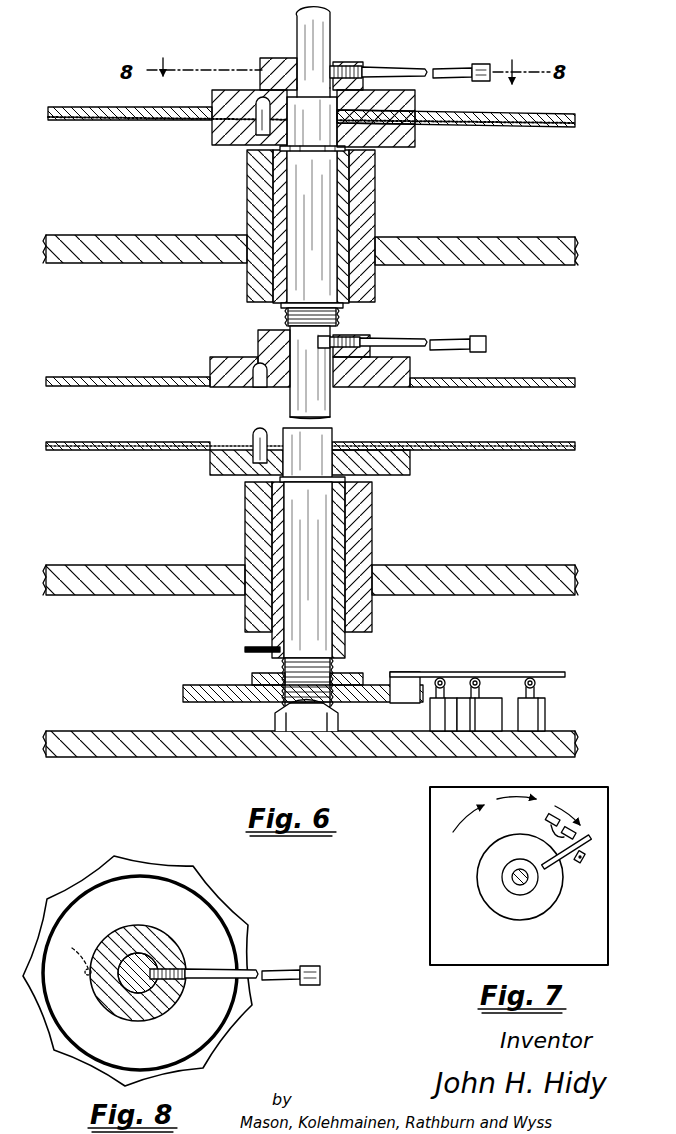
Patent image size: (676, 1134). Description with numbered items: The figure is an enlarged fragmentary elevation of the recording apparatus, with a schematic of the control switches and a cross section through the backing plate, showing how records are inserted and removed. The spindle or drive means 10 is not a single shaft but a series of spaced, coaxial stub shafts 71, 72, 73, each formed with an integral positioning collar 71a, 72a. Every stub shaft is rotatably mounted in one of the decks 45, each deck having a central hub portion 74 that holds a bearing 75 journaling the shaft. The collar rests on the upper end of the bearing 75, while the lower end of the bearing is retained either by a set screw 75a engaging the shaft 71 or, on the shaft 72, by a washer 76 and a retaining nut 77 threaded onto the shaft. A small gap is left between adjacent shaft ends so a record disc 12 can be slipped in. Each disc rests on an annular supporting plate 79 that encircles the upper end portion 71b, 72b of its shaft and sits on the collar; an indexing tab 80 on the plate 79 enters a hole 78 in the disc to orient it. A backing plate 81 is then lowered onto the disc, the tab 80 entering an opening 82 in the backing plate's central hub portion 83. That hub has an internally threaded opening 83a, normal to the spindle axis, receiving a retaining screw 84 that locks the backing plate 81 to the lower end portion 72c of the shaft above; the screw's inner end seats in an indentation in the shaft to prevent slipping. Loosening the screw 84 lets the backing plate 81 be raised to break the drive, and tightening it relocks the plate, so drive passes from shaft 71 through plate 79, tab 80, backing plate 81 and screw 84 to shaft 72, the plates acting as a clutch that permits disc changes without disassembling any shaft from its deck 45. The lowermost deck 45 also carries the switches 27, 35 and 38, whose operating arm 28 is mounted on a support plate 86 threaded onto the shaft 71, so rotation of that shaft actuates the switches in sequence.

In FIG. 6, the spindle or drive means 10 is at (304, 731).
In FIG. 6, the record disc 12 is at (569, 122).
In FIG. 6, the switch 27 is at (483, 705).
In FIG. 7, the switch 27 is at (560, 836).
In FIG. 6, the operating arm 28 is at (515, 672).
In FIG. 7, the operating arm 28 is at (592, 838).
In FIG. 6, the switch 35 is at (542, 712).
In FIG. 7, the switch 35 is at (588, 857).
In FIG. 6, the switch 38 is at (440, 708).
In FIG. 7, the switch 38 is at (546, 818).
In FIG. 6, the deck 45 is at (571, 255).
In FIG. 7, the deck 45 is at (598, 895).
In FIG. 6, the stub shaft 71 is at (315, 540).
In FIG. 7, the stub shaft 71 is at (514, 877).
In FIG. 6, the positioning collar 71a is at (345, 483).
In FIG. 6, the upper end portion 71b is at (320, 437).
In FIG. 6, the stub shaft 72 is at (318, 206).
In FIG. 6, the positioning collar 72a is at (362, 150).
In FIG. 6, the upper end portion 72b is at (303, 106).
In FIG. 6, the lower end portion 72c is at (295, 398).
In FIG. 6, the stub shaft 73 is at (331, 38).
In FIG. 8, the stub shaft 73 is at (120, 950).
In FIG. 6, the central hub portion 74 is at (366, 226).
In FIG. 6, the bearing 75 is at (341, 290).
In FIG. 6, the set screw 75a is at (265, 648).
In FIG. 6, the washer 76 is at (352, 307).
In FIG. 6, the retaining nut 77 is at (341, 318).
In FIG. 6, the hole 78 is at (257, 137).
In FIG. 6, the annular supporting plate 79 is at (222, 128).
In FIG. 6, the indexing tab 80 is at (253, 110).
In FIG. 8, the indexing tab 80 is at (73, 957).
In FIG. 6, the backing plate 81 is at (410, 115).
In FIG. 8, the backing plate 81 is at (238, 1030).
In FIG. 6, the opening 82 is at (253, 103).
In FIG. 6, the central hub portion 83 is at (260, 62).
In FIG. 6, the internally threaded opening 83a is at (360, 66).
In FIG. 8, the internally threaded opening 83a is at (150, 965).
In FIG. 6, the retaining screw 84 is at (477, 65).
In FIG. 8, the retaining screw 84 is at (310, 965).
In FIG. 6, the support plate 86 is at (212, 688).
In FIG. 7, the support plate 86 is at (481, 858).